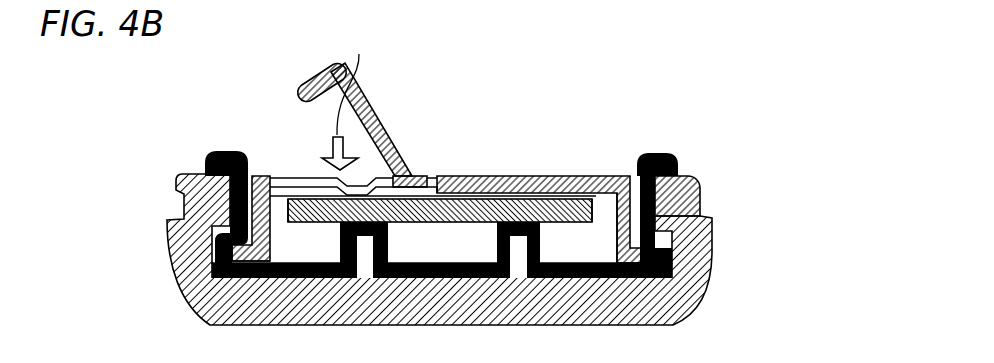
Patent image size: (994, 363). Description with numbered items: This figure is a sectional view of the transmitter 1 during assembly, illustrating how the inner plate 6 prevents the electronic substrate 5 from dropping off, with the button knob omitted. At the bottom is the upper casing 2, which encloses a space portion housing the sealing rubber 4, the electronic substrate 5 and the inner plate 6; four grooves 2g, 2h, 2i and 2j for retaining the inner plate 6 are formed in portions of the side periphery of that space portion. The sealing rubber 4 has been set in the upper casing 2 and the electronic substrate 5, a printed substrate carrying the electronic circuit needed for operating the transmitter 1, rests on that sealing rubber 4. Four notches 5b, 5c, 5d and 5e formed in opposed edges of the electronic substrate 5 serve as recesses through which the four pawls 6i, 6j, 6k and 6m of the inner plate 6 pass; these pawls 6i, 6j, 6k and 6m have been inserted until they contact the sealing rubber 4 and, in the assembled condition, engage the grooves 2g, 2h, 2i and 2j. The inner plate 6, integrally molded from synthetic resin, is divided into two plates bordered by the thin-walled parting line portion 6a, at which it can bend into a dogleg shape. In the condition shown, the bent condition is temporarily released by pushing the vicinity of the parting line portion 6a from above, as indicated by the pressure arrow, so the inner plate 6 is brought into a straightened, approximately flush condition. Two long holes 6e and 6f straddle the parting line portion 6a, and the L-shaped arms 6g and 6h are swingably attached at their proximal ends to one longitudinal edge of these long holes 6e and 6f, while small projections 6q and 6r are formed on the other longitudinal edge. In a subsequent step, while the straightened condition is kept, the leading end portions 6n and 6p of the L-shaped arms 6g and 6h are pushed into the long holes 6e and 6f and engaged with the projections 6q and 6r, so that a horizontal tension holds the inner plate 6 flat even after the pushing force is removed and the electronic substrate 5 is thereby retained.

The transmitter 1 is at (440, 172).
The upper casing 2 is at (440, 249).
The groove 2g is at (142, 293).
The groove 2h is at (211, 289).
The groove 2i is at (740, 293).
The groove 2j is at (673, 287).
The sealing rubber 4 is at (665, 148).
The electronic substrate 5 is at (442, 187).
The notch 5b is at (307, 229).
The notch 5c is at (281, 208).
The notch 5d is at (602, 173).
The notch 5e is at (615, 250).
The inner plate 6 is at (431, 148).
The parting line portion 6a is at (362, 175).
The long hole 6e is at (428, 156).
The long hole 6f is at (298, 177).
The L-shaped arm 6g is at (402, 119).
The L-shaped arm 6h is at (372, 106).
The pawl 6i is at (171, 241).
The pawl 6j is at (226, 240).
The pawl 6k is at (704, 215).
The pawl 6m is at (633, 233).
The leading end portion 6n is at (286, 74).
The leading end portion 6p is at (309, 76).
The projection 6q is at (232, 179).
The projection 6r is at (272, 176).